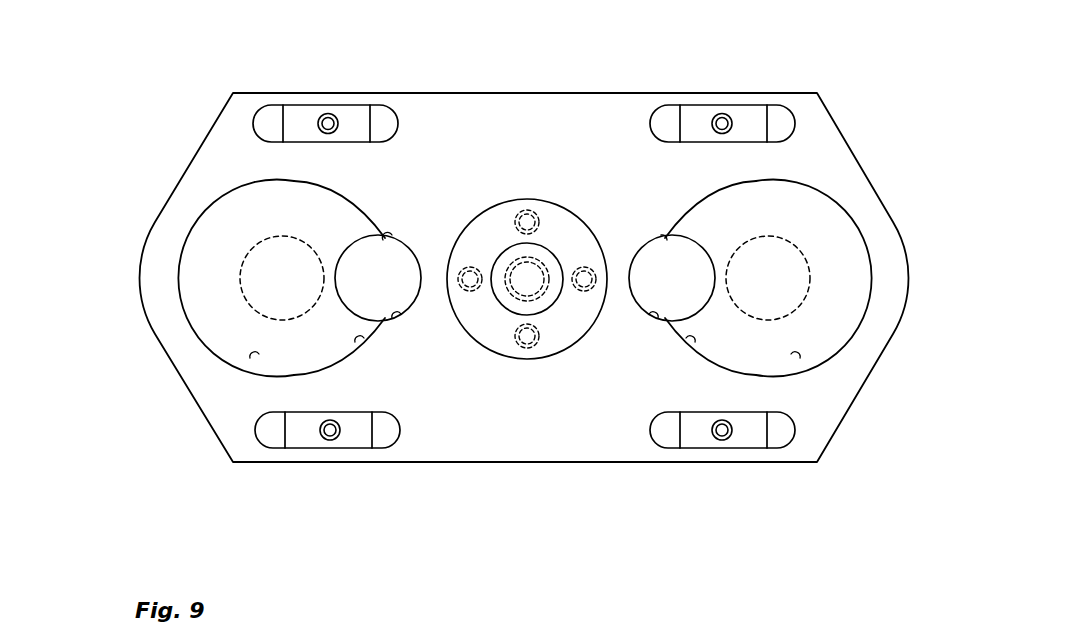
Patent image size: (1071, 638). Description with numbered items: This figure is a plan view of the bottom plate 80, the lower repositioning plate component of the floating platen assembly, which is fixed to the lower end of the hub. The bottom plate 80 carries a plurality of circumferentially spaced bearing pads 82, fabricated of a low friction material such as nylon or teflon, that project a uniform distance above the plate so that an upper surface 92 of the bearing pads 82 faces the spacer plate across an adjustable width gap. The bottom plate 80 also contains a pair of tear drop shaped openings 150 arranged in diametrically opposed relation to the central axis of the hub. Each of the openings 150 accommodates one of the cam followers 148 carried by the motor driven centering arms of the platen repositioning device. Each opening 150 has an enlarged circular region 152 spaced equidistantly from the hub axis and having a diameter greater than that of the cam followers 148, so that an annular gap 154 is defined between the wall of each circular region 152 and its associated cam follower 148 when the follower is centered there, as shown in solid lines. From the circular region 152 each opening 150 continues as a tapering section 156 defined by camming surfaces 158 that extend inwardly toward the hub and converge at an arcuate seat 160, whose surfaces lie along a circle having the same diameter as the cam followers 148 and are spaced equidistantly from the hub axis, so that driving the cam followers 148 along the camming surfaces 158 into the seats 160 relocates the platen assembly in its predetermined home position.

The bottom plate 80 is at (838, 122).
The bearing pads 82 is at (357, 118).
The upper surface 92 is at (305, 118).
The cam followers 148 is at (383, 237).
The tear drop shaped openings 150 is at (208, 352).
The enlarged circular region 152 is at (263, 353).
The annular gap 154 is at (213, 233).
The tapering section 156 is at (393, 322).
The camming surfaces 158 is at (407, 243).
The arcuate seat 160 is at (403, 252).